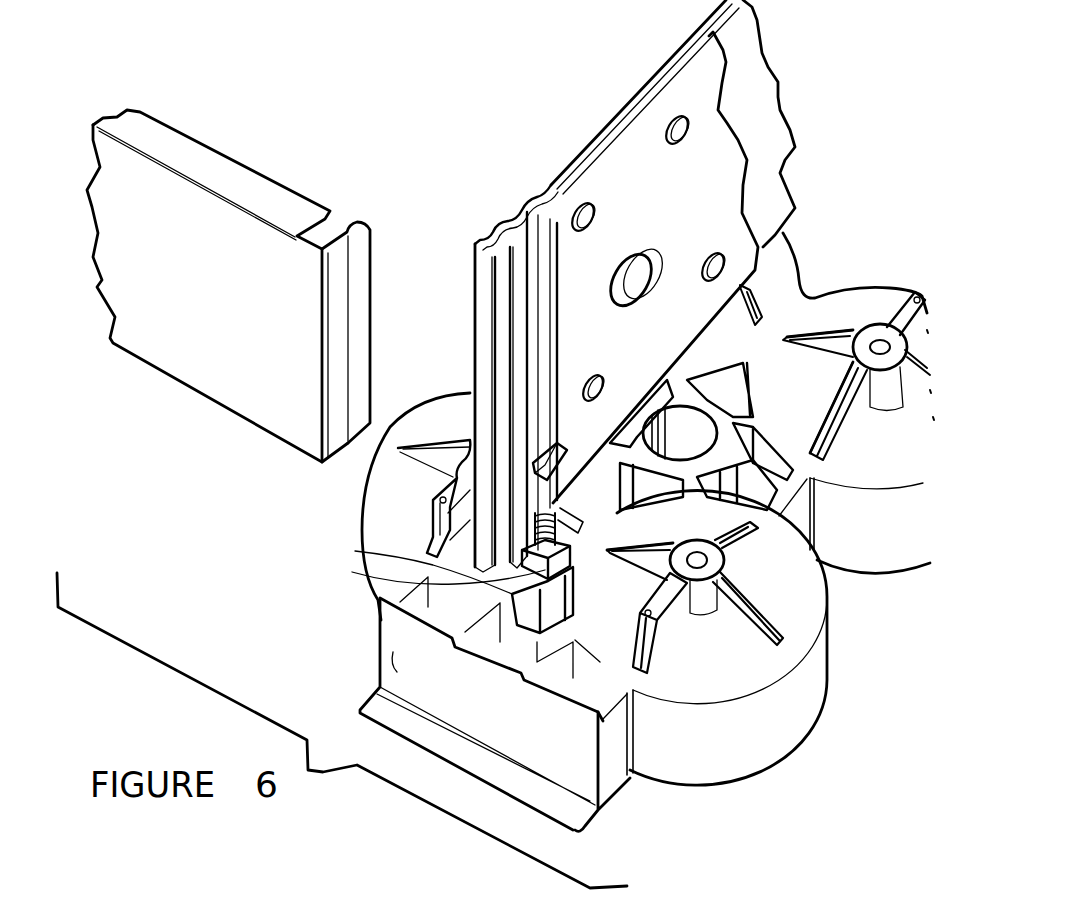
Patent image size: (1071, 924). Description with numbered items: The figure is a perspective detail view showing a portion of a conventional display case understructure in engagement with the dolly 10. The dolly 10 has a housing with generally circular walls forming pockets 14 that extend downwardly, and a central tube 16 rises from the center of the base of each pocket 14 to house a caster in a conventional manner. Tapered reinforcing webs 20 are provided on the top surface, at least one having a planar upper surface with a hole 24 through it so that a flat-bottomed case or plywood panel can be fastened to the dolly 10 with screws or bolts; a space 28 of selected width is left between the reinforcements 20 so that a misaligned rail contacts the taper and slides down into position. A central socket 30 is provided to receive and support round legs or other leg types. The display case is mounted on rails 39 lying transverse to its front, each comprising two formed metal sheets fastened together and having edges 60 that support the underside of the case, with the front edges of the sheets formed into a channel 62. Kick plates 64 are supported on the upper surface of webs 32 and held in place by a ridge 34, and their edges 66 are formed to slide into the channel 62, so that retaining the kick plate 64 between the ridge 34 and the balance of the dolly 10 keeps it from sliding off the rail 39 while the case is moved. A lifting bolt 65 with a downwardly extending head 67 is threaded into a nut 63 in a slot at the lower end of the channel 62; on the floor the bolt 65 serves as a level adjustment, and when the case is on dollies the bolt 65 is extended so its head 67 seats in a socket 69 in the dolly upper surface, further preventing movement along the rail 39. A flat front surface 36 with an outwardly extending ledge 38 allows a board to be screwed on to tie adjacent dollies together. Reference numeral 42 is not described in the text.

The dolly 10 is at (842, 688).
The pockets 14 is at (714, 755).
The central tube 16 is at (877, 333).
The tapered reinforcing webs 20 is at (447, 440).
The hole 24 is at (917, 293).
The space 28 is at (778, 263).
The central socket 30 is at (700, 430).
The webs 32 is at (405, 582).
The ridge 34 is at (380, 607).
The flat front surface 36 is at (378, 673).
The ledge 38 is at (758, 90).
The rails 39 is at (610, 150).
The aperture 42 is at (663, 258).
The edges 60 is at (644, 84).
The channel 62 is at (510, 220).
The nut 63 is at (567, 447).
The kick plates 64 is at (221, 285).
The lifting rod or bolt 65 is at (560, 524).
The edges 66 is at (363, 239).
The head 67 is at (570, 557).
The socket 69 is at (420, 557).